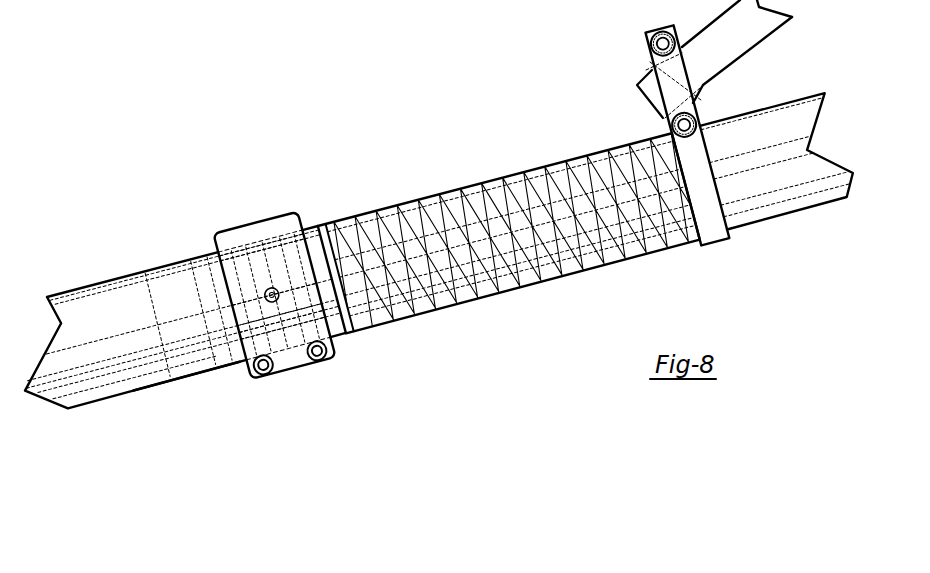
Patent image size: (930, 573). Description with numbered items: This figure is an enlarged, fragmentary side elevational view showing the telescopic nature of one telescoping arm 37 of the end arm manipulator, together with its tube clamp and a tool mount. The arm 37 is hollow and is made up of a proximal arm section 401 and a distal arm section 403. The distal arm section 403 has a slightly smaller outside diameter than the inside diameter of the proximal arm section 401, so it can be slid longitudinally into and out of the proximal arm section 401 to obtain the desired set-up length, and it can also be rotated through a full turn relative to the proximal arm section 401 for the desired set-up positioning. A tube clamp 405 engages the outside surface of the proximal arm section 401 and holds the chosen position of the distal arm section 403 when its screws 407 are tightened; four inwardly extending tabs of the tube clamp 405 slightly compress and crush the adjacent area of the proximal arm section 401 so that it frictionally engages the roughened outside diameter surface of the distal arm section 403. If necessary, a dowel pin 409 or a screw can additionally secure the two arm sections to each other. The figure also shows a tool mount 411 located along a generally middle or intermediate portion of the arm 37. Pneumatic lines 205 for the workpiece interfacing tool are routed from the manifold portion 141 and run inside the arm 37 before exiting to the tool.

The telescoping arm 37 is at (156, 387).
The manifold portion 141 is at (593, 59).
The pneumatic lines 205 is at (82, 356).
The proximal arm section 401 is at (120, 297).
The distal arm section 403 is at (443, 203).
The tube clamp 405 is at (250, 232).
The screws 407 is at (315, 356).
The dowel pin 409 is at (276, 292).
The tool mount 411 is at (713, 102).